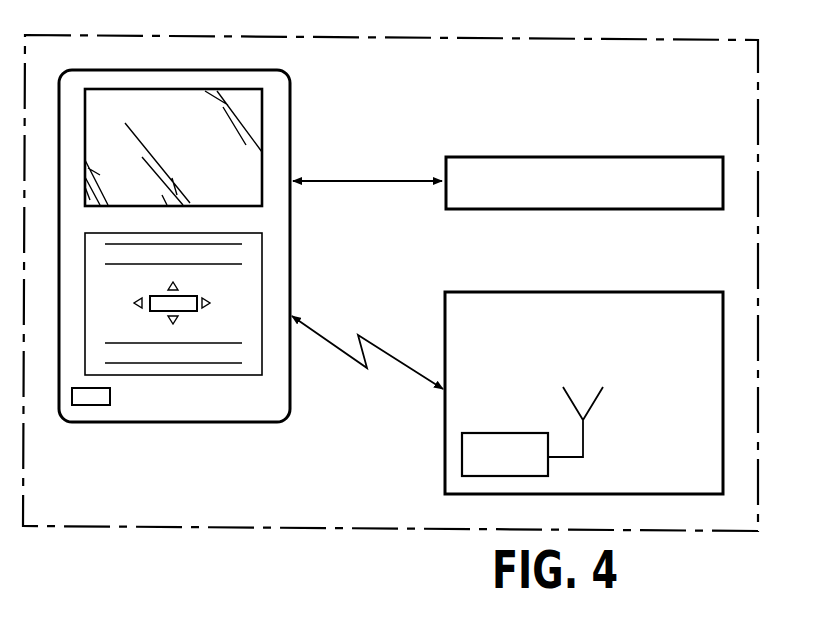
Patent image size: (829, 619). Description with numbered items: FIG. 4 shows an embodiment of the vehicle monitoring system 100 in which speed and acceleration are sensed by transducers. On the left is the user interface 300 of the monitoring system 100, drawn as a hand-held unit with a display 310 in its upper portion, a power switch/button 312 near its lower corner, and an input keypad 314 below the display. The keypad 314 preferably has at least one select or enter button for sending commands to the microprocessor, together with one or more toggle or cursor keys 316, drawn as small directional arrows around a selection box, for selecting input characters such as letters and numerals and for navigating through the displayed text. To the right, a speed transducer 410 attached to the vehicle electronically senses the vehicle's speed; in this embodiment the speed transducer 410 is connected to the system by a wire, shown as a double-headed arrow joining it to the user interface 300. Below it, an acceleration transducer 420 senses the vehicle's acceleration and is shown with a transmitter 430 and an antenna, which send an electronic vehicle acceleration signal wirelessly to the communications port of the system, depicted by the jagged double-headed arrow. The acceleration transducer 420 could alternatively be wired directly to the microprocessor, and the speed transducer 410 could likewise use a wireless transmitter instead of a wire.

The monitoring system 100 is at (710, 40).
The user interface 300 is at (292, 254).
The display 310 is at (248, 108).
The power switch/button 312 is at (98, 406).
The input keypad 314 is at (172, 323).
The cursor keys 316 is at (210, 303).
The speed transducer 410 is at (490, 157).
The acceleration transducer 420 is at (483, 292).
The transmitter 430 is at (462, 444).